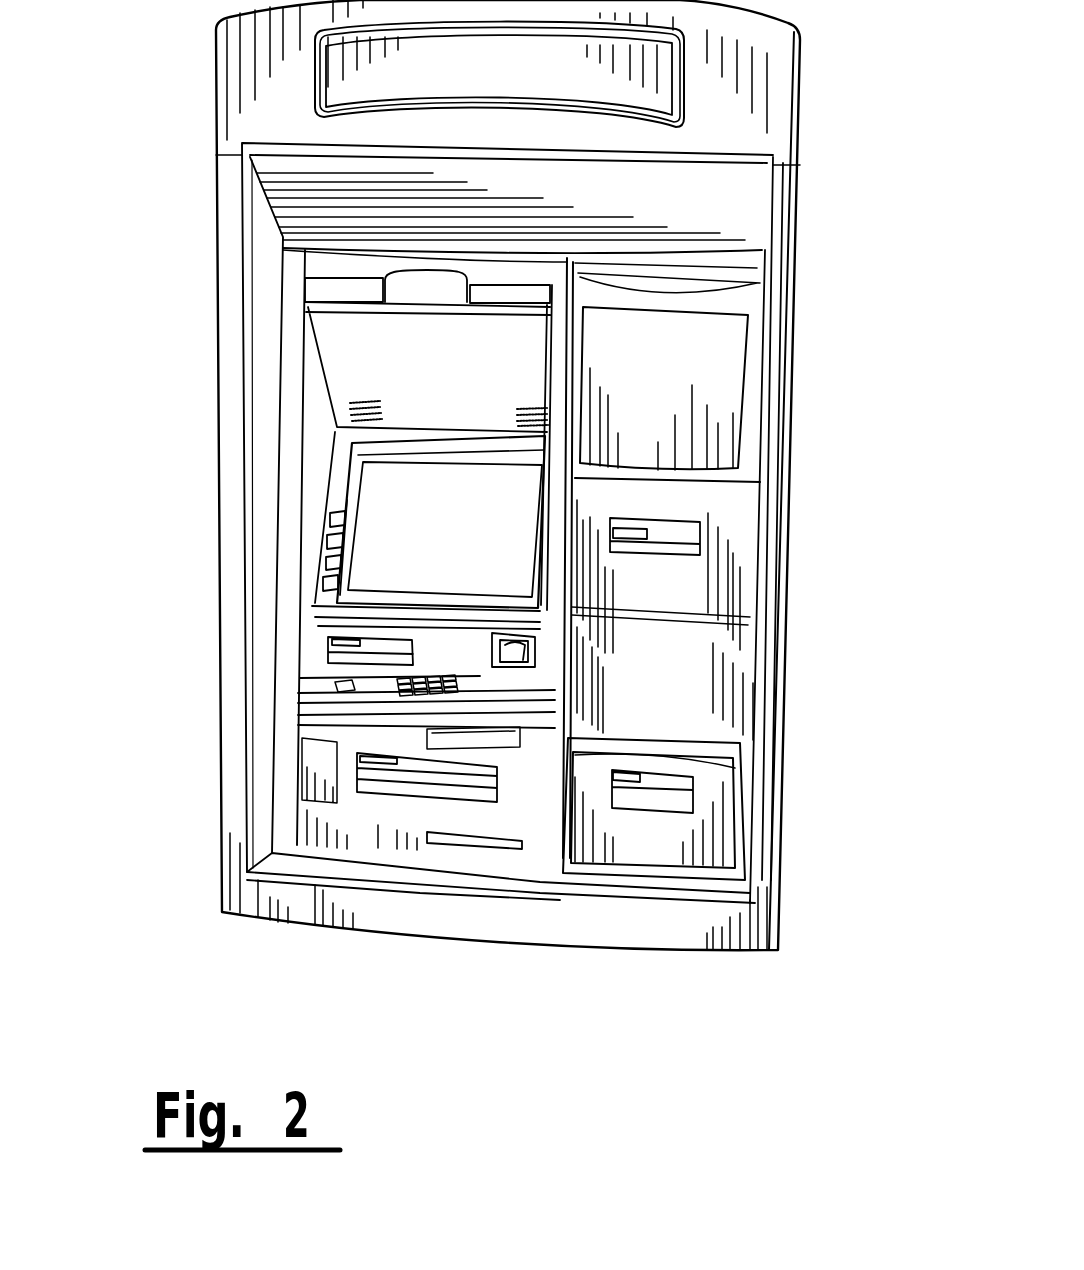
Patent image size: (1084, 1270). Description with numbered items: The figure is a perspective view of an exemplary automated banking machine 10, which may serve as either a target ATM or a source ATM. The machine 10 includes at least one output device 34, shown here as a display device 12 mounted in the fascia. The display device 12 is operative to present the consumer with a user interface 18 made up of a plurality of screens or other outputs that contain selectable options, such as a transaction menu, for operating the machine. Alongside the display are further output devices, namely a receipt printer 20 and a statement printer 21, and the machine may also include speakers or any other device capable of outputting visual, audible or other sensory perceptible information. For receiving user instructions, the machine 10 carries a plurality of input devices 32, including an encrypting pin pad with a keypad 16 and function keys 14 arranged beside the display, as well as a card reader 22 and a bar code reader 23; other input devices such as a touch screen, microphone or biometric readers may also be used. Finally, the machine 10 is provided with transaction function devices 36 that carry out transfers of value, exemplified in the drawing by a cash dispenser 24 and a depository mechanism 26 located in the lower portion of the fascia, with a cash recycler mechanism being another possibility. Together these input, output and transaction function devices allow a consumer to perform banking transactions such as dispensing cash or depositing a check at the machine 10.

The automated banking machine 10 is at (822, 171).
The display device 12 is at (378, 508).
The function keys 14 is at (322, 593).
The keypad 16 is at (358, 780).
The user interface 18 is at (362, 562).
The receipt printer 20 is at (700, 536).
The statement printer 21 is at (418, 638).
The card reader 22 is at (517, 668).
The bar code reader 23 is at (513, 688).
The cash dispenser 24 is at (393, 700).
The depository mechanism 26 is at (673, 793).
The input devices 32 is at (318, 545).
The output device 34 is at (350, 452).
The transaction function devices 36 is at (605, 815).